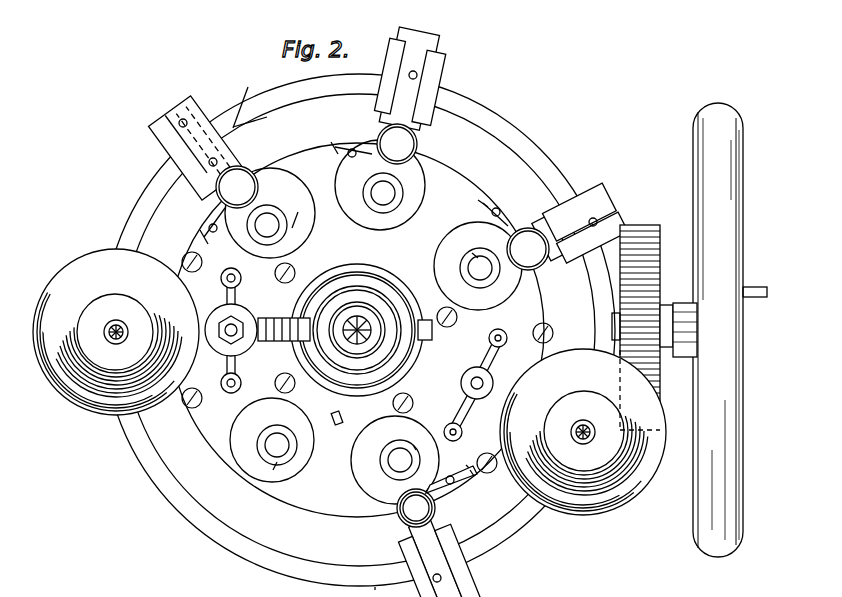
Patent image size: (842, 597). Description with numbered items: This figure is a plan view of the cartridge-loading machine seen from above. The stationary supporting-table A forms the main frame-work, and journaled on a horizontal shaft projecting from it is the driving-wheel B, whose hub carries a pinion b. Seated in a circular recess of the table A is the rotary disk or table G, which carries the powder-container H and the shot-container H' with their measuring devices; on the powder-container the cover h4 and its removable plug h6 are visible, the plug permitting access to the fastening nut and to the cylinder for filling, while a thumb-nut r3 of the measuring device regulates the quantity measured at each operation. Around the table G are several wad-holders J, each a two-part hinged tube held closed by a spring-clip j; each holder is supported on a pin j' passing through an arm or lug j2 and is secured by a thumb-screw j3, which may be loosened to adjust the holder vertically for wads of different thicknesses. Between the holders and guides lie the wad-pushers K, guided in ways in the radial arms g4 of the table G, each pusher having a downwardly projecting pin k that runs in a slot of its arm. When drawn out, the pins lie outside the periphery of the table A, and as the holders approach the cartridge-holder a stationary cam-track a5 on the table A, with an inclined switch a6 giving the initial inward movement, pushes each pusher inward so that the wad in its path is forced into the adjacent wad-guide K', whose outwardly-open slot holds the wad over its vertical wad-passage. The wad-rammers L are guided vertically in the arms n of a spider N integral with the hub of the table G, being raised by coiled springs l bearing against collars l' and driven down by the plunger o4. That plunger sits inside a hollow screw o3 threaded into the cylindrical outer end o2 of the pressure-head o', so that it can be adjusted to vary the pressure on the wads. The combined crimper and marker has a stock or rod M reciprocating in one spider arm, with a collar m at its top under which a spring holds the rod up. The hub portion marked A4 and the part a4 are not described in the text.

The supporting-table A is at (494, 150).
The central hub A4 is at (308, 312).
The driving-wheel B is at (708, 160).
The pinion b is at (634, 317).
The rotary disk or table G is at (361, 330).
The powder-container H is at (101, 332).
The shot-container H' is at (583, 436).
The cover h4 is at (72, 392).
The removable plug h6 is at (115, 320).
The wad-holder J is at (216, 192).
The spring-clip j is at (400, 523).
The pin j' is at (480, 485).
The arm or lug j2 is at (441, 482).
The thumb-screw j3 is at (470, 463).
The wad-pusher K is at (381, 312).
The wad-guide K' is at (354, 327).
The pin k is at (217, 160).
The radial arm g4 is at (226, 112).
The wad-rammer L is at (373, 326).
The coiled spring l is at (297, 212).
The collar l' is at (445, 334).
The stock or rod M is at (277, 445).
The collar m is at (267, 472).
The spider N is at (352, 408).
The arm n is at (373, 322).
The arm or pressure-head o' is at (284, 336).
The cylindrical outer end o2 is at (240, 348).
The hollow screw o3 is at (222, 312).
The plunger o4 is at (222, 347).
The thumb-nut r3 is at (238, 278).
The rim section a4 is at (379, 590).
The stationary cam or cam-track a5 is at (264, 116).
The inclined projection or switch a6 is at (250, 97).